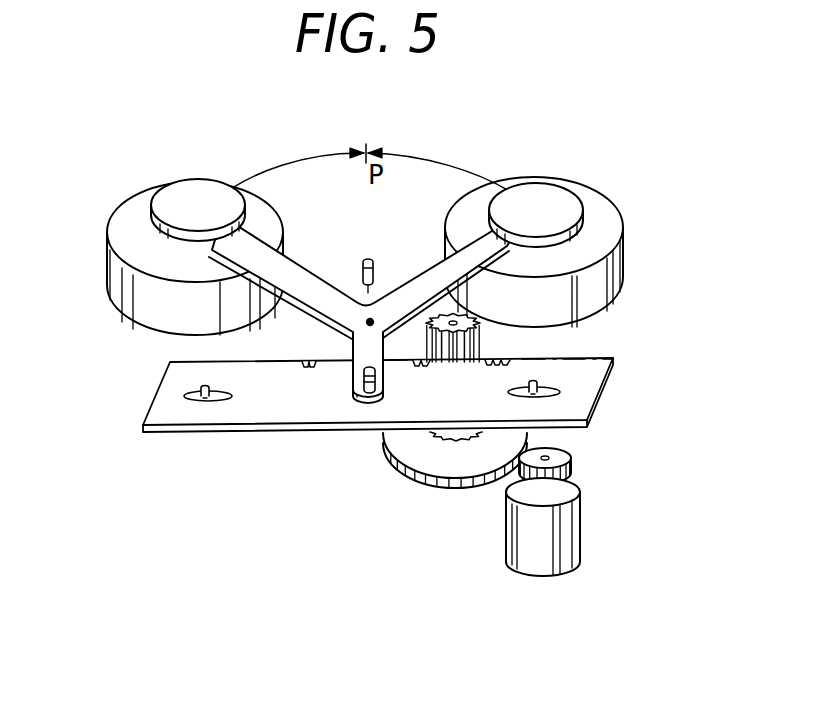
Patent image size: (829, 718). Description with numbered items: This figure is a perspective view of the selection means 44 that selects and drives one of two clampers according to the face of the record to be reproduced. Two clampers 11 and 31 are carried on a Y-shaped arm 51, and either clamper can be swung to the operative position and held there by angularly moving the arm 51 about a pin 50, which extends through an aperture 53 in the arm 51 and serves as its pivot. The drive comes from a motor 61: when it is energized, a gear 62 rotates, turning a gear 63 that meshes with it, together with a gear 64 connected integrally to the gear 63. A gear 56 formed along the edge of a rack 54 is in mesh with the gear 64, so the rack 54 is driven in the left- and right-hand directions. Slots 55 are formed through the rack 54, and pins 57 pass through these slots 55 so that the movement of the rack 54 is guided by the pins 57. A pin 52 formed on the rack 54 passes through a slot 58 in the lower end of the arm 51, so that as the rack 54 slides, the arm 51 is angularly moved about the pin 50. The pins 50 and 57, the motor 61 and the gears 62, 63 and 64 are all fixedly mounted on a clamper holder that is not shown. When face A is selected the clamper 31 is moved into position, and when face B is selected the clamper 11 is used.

The clamper 11 is at (604, 217).
The clamper 31 is at (140, 218).
The selection means 44 is at (470, 522).
The pin 50 is at (361, 268).
The arm 51 is at (318, 316).
The pin 52 is at (369, 396).
The aperture 53 is at (372, 318).
The rack 54 is at (240, 418).
The slots 55 is at (184, 397).
The gear 56 is at (490, 352).
The pins 57 is at (205, 402).
The slot 58 is at (363, 368).
The motor 61 is at (582, 535).
The gear 62 is at (560, 458).
The gear 63 is at (430, 483).
The gear 64 is at (480, 338).